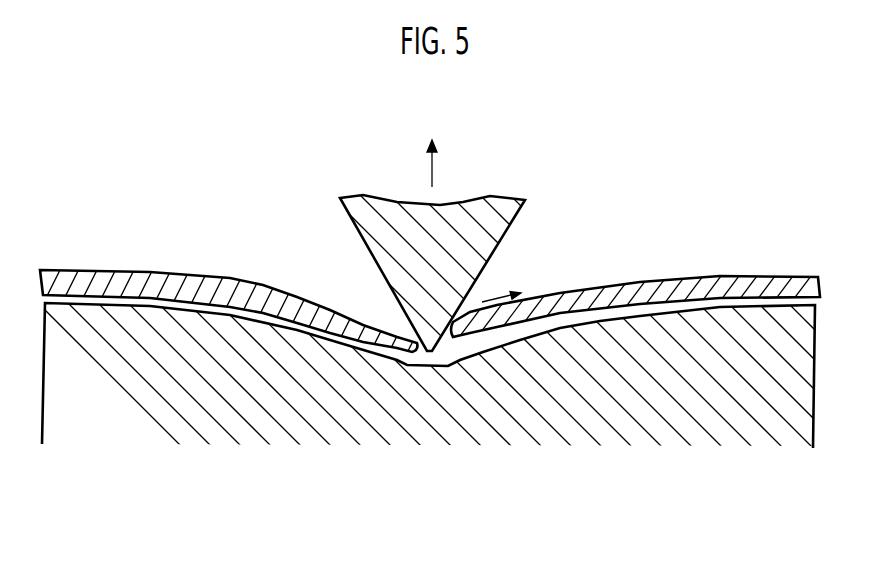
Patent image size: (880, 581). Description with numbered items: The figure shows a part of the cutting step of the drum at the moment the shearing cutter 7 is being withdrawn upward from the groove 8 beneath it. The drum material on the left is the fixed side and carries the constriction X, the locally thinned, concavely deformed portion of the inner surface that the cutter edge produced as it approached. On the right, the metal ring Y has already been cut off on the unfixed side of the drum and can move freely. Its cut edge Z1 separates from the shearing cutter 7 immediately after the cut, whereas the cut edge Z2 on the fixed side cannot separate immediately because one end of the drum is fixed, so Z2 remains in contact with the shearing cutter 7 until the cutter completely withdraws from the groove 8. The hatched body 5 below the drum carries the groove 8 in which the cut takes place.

The substrate 5 is at (800, 362).
The shearing cutter 7 is at (505, 243).
The groove 8 is at (465, 357).
The constriction X is at (119, 268).
The metal ring Y is at (741, 275).
The cut edge Z1 is at (451, 347).
The cut edge Z2 is at (418, 353).